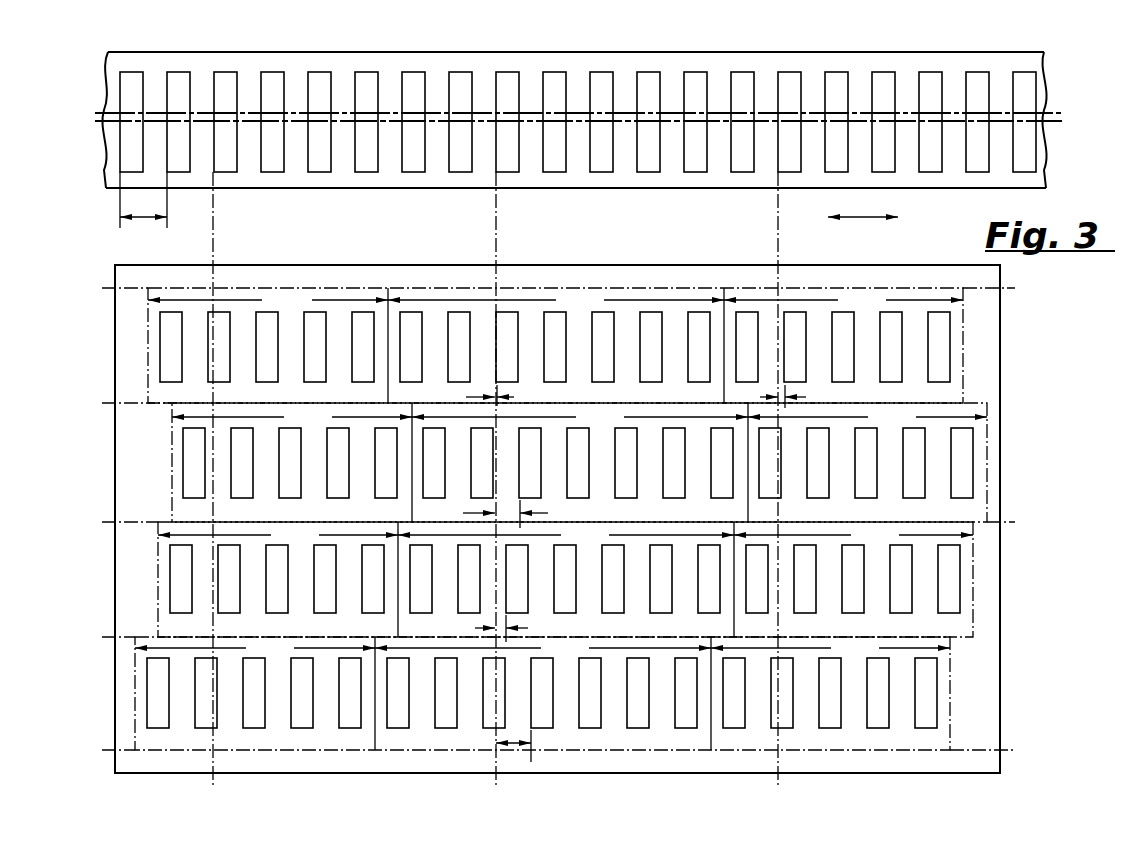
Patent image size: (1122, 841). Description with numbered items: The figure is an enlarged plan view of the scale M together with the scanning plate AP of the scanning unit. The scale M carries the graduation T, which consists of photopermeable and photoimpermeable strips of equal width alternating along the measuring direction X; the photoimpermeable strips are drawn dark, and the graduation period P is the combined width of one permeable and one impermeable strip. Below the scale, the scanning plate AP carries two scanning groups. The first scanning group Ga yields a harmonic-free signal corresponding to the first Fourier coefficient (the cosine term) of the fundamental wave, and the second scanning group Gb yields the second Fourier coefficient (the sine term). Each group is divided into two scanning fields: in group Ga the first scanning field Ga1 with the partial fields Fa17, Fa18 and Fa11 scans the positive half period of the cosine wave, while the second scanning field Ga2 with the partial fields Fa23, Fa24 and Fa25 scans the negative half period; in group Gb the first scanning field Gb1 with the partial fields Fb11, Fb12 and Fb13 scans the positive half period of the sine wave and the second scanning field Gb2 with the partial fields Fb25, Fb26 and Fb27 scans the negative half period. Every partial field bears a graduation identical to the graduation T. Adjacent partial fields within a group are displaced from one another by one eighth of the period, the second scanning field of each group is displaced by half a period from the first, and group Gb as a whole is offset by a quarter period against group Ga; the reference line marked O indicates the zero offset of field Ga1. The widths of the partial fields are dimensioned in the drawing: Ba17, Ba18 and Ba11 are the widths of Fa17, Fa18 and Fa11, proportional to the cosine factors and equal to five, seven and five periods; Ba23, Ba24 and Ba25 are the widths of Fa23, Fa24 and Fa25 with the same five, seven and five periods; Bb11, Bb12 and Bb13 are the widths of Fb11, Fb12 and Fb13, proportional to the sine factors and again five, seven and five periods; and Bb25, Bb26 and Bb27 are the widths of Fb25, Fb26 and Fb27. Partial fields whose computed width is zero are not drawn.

The scale M is at (672, 180).
The graduation T is at (741, 162).
The graduation period P is at (143, 219).
The measuring direction X is at (861, 221).
The scanning plate AP is at (233, 268).
The first scanning group Ga is at (1010, 288).
The second scanning group Gb is at (1010, 522).
The first scanning field of the first scanning group Ga1 is at (510, 348).
The second scanning field of the first scanning group Ga2 is at (522, 465).
The first scanning field of the second scanning group Gb1 is at (515, 582).
The second scanning field of the second scanning group Gb2 is at (504, 719).
The width of partial field Fa17 Ba17 is at (268, 301).
The width of partial field Fa18 Ba18 is at (556, 301).
The width of partial field Fa11 Ba11 is at (843, 301).
The width of partial field Fa23 Ba23 is at (292, 418).
The width of partial field Fa24 Ba24 is at (580, 418).
The width of partial field Fa25 Ba25 is at (867, 418).
The width of partial field Fb11 Bb11 is at (278, 536).
The width of partial field Fb12 Bb12 is at (566, 536).
The width of partial field Fb13 Bb13 is at (853, 536).
The width of partial field Fb25 Bb25 is at (255, 649).
The width of partial field Fb26 Bb26 is at (543, 649).
The width of partial field Fb27 Bb27 is at (830, 649).
The partial field Fa17 is at (296, 393).
The partial field Fa18 is at (597, 393).
The partial field Fa11 is at (879, 393).
The partial field Fa23 is at (319, 509).
The partial field Fa24 is at (612, 509).
The partial field Fa25 is at (904, 509).
The partial field Fb11 is at (305, 624).
The partial field Fb12 is at (598, 624).
The partial field Fb13 is at (890, 624).
The partial field Fb25 is at (283, 737).
The partial field Fb26 is at (578, 737).
The partial field Fb27 is at (868, 737).
The zero offset O is at (514, 397).